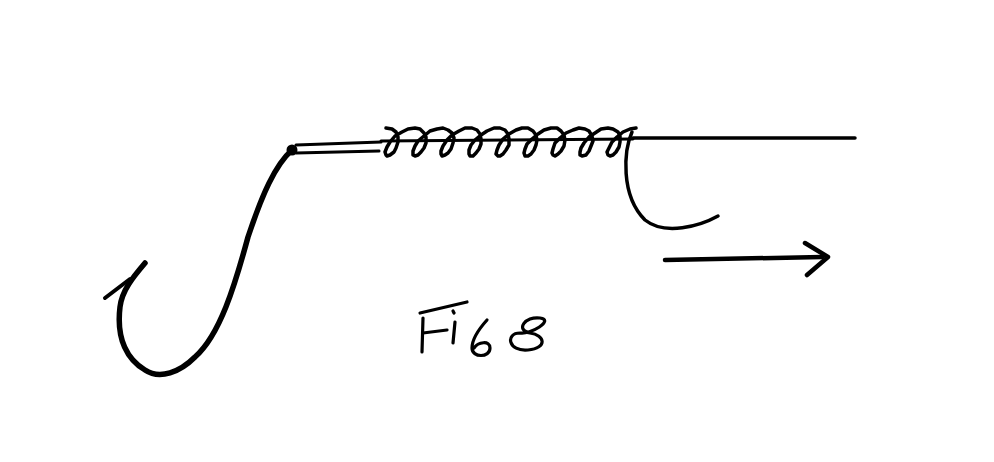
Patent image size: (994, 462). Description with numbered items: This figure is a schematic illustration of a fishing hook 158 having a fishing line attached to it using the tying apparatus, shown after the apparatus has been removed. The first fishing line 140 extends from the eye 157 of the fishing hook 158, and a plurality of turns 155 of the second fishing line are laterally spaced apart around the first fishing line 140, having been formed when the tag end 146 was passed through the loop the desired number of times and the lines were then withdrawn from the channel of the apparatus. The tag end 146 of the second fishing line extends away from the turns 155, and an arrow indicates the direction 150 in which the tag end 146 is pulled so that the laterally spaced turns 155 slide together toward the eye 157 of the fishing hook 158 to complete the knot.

The first fishing line 140 is at (765, 138).
The tag end 146 is at (805, 182).
The direction 150 is at (753, 270).
The line wraps (knot coils) 155 is at (413, 88).
The eye 157 is at (280, 130).
The fishing hook 158 is at (102, 250).